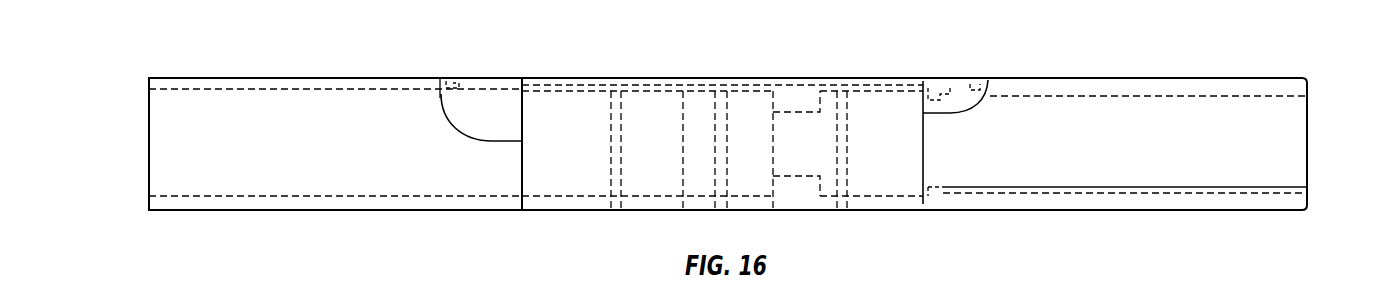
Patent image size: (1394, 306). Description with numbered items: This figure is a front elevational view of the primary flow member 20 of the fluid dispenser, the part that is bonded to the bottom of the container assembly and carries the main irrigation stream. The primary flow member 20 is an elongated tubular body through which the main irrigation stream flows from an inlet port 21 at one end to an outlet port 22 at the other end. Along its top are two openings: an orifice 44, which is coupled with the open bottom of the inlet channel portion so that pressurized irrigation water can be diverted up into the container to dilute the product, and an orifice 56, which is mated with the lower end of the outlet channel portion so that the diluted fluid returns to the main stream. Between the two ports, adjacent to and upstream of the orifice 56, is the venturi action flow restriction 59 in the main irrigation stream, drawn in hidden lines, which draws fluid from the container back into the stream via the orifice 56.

The primary flow member 20 is at (729, 112).
The inlet port 21 is at (149, 130).
The outlet port 22 is at (1308, 135).
The orifice 44 is at (467, 88).
The orifice 56 is at (962, 82).
The venturi action flow restriction 59 is at (820, 142).